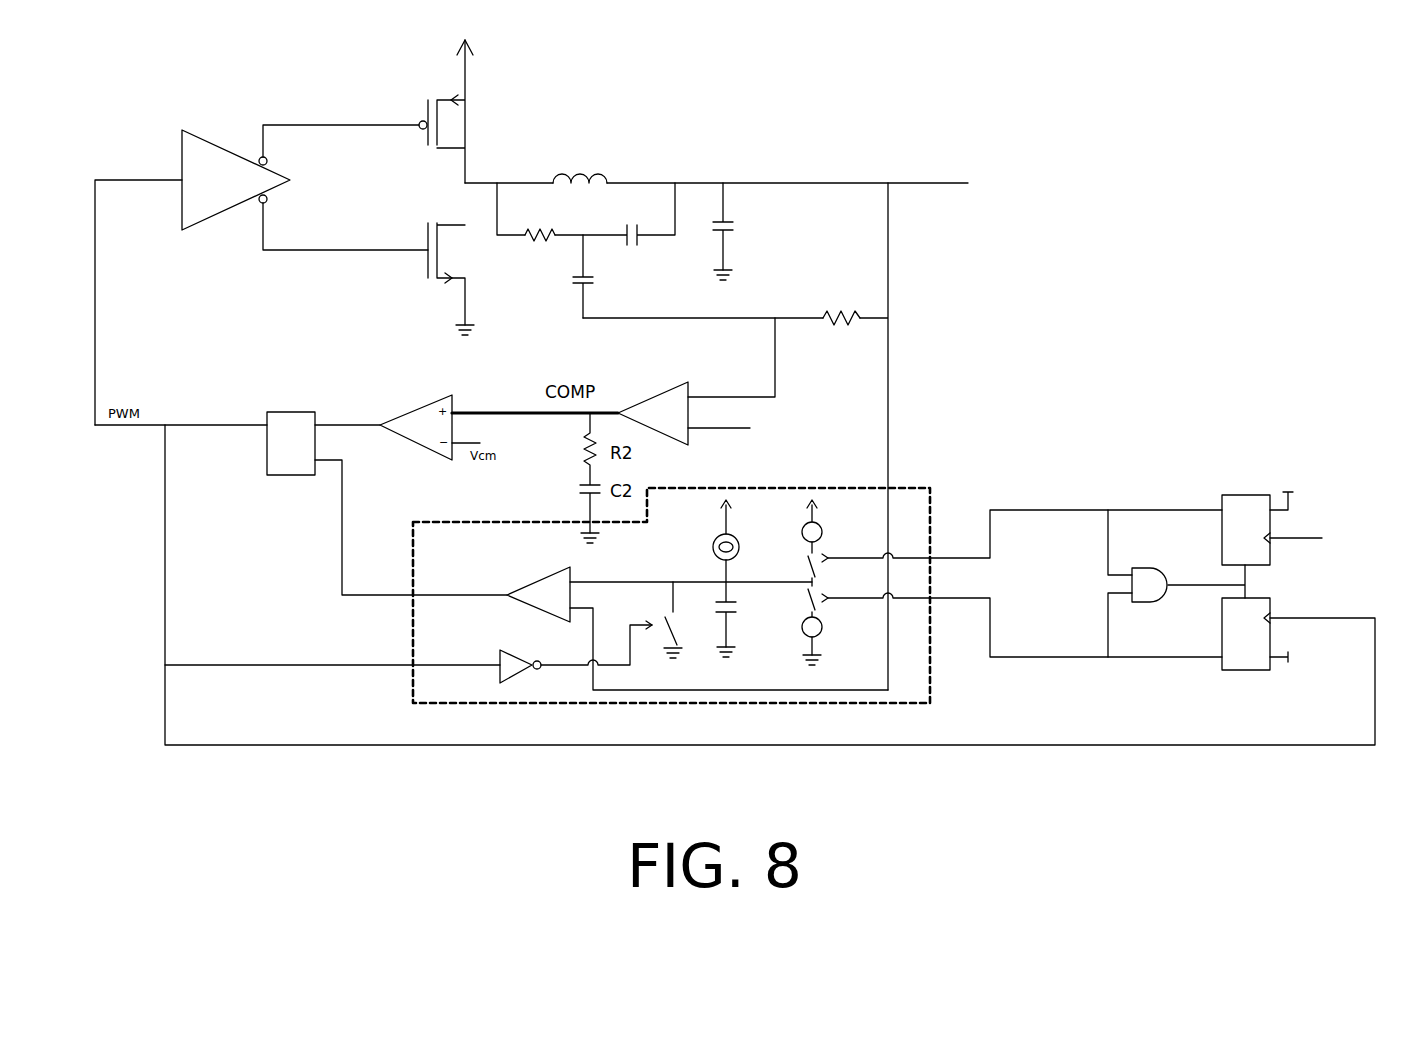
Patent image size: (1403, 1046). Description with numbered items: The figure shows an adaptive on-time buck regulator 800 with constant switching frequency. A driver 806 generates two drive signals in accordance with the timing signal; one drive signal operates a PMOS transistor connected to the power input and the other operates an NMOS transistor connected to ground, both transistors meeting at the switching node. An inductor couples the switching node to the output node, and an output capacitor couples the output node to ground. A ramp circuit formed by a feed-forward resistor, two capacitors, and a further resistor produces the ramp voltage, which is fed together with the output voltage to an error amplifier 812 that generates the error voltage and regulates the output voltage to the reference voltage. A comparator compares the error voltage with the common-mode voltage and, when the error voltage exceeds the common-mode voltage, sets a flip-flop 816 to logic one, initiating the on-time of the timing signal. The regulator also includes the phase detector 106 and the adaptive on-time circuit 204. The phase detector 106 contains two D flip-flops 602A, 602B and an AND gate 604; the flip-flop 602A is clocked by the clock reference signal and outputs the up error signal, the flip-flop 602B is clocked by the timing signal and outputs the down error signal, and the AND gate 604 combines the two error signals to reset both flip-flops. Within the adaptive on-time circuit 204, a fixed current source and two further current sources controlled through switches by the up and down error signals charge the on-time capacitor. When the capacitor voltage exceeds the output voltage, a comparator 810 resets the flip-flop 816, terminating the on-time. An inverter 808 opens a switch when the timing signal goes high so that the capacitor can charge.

The adaptive on-time buck regulator 800 is at (1236, 178).
The driver 806 is at (236, 180).
The error amplifier 812 is at (653, 398).
The flip-flop 816 is at (287, 412).
The comparator 810 is at (540, 582).
The inverter 808 is at (520, 657).
The AOT circuit 204 is at (930, 488).
The phase detector 106 is at (1088, 408).
The AND gate 604 is at (1143, 568).
The D flip-flop 602A is at (1243, 495).
The D flip-flop 602B is at (1252, 670).